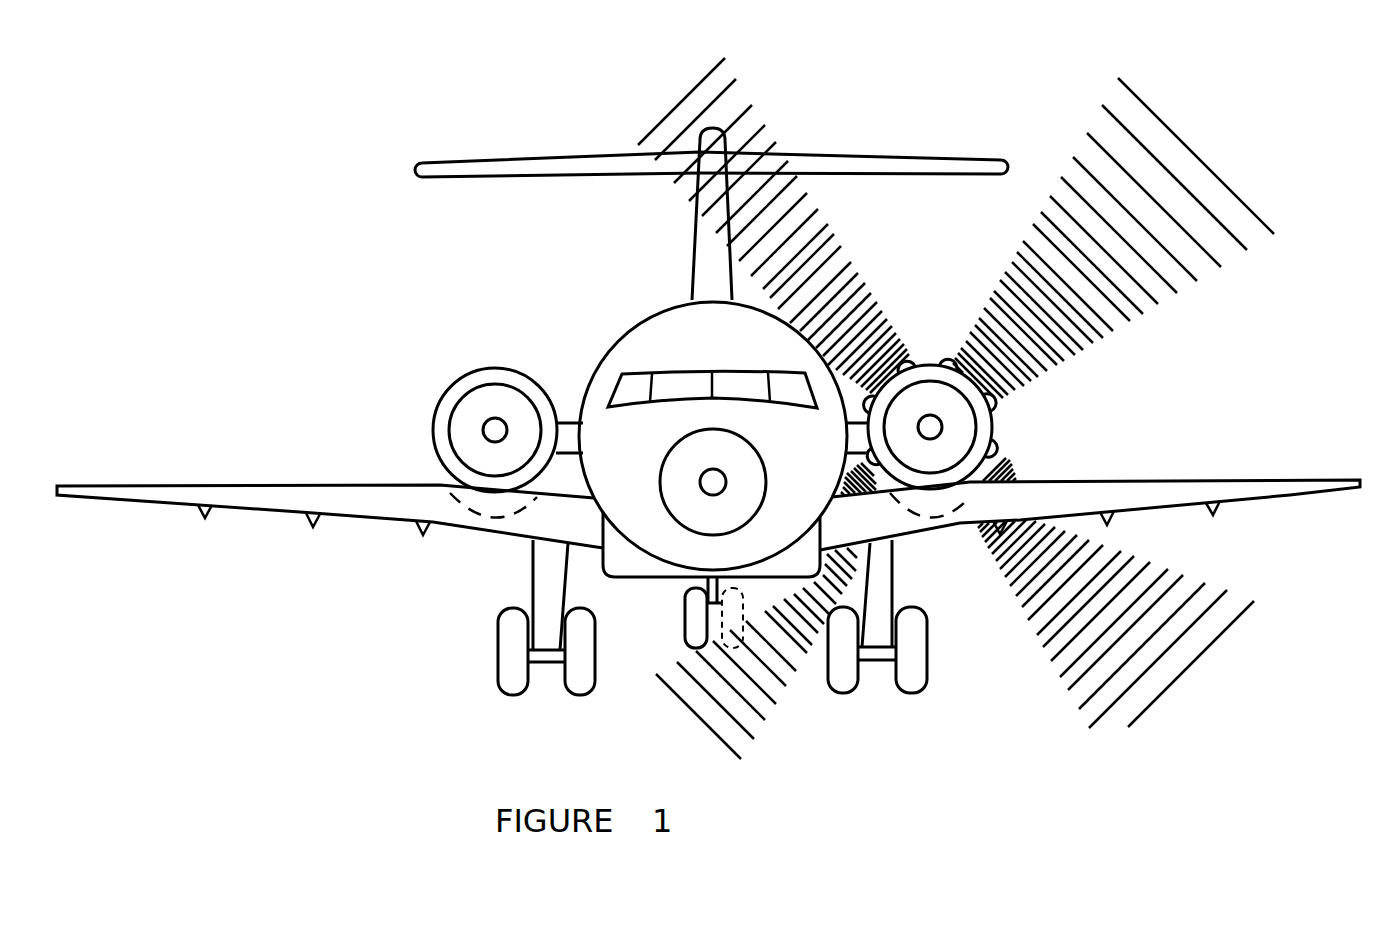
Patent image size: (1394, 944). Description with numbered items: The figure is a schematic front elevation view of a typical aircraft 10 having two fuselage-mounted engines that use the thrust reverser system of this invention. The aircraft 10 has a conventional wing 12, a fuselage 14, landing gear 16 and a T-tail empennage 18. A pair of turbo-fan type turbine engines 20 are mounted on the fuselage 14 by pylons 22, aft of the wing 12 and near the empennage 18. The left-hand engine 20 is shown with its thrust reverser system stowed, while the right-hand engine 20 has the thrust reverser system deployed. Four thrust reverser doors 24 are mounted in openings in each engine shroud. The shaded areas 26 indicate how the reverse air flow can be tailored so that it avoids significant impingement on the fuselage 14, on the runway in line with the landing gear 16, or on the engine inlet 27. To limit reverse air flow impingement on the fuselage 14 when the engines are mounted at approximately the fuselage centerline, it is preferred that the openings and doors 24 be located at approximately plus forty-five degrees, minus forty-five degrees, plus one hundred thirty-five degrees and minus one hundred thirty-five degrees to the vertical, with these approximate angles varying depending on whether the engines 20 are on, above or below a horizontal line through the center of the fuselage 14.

The aircraft 10 is at (422, 267).
The wing 12 is at (203, 484).
The fuselage 14 is at (660, 312).
The landing gear 16 is at (498, 615).
The T-tail empennage 18 is at (527, 152).
The turbo-fan type turbine engine 20 is at (447, 395).
The pylon 22 is at (571, 420).
The thrust reverser door 24 is at (906, 358).
The shaded area 26 is at (848, 278).
The engine inlet 27 is at (483, 385).